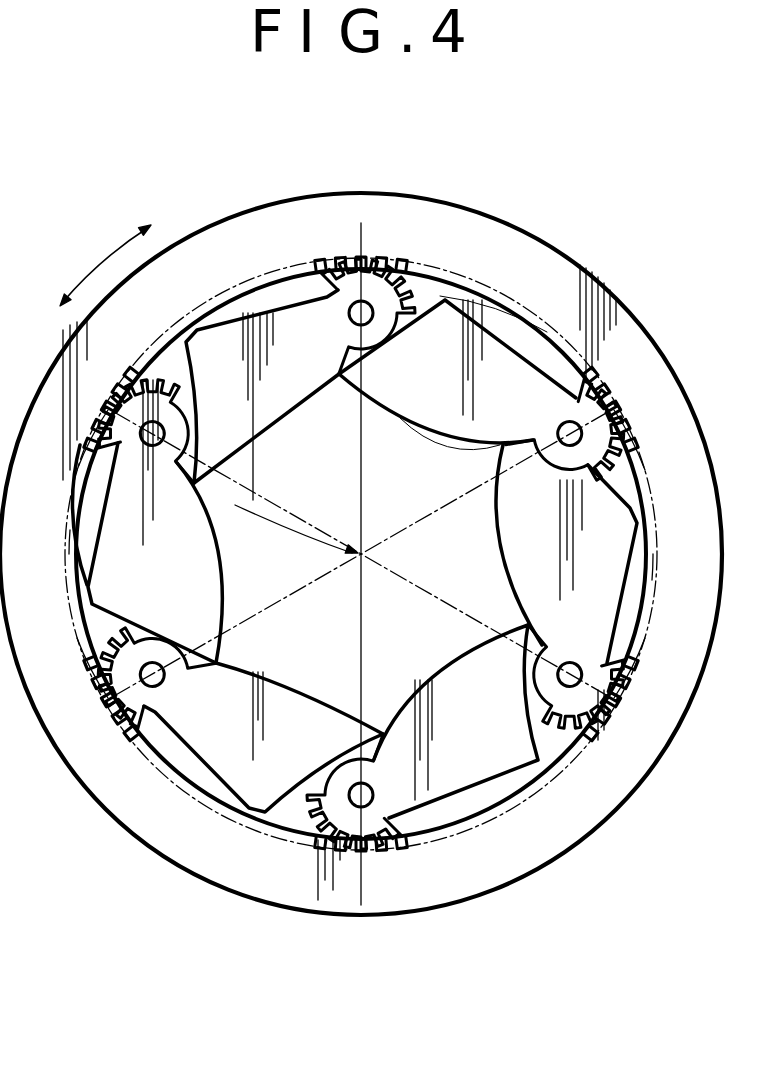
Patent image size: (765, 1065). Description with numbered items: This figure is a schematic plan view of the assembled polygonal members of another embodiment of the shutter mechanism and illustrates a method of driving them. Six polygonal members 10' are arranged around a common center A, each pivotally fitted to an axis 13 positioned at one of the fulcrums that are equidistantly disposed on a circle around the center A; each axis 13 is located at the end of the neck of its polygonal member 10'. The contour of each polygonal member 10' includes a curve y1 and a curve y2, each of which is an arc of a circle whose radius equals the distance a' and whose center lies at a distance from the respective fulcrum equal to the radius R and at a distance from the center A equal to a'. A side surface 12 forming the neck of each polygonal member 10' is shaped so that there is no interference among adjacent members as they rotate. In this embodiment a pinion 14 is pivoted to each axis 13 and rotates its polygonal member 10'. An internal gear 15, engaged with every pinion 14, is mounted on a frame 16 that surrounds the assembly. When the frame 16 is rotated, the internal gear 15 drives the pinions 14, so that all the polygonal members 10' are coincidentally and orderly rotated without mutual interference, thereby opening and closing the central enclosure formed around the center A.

The frame 16 is at (188, 250).
The internal gear 15 is at (243, 291).
The axis 13 is at (366, 305).
The polygonal member 10' is at (354, 518).
The pinion 14 is at (428, 313).
The side surface 12 is at (592, 277).
The curve y1 is at (445, 441).
The curve y2 is at (492, 271).
The center A is at (365, 546).